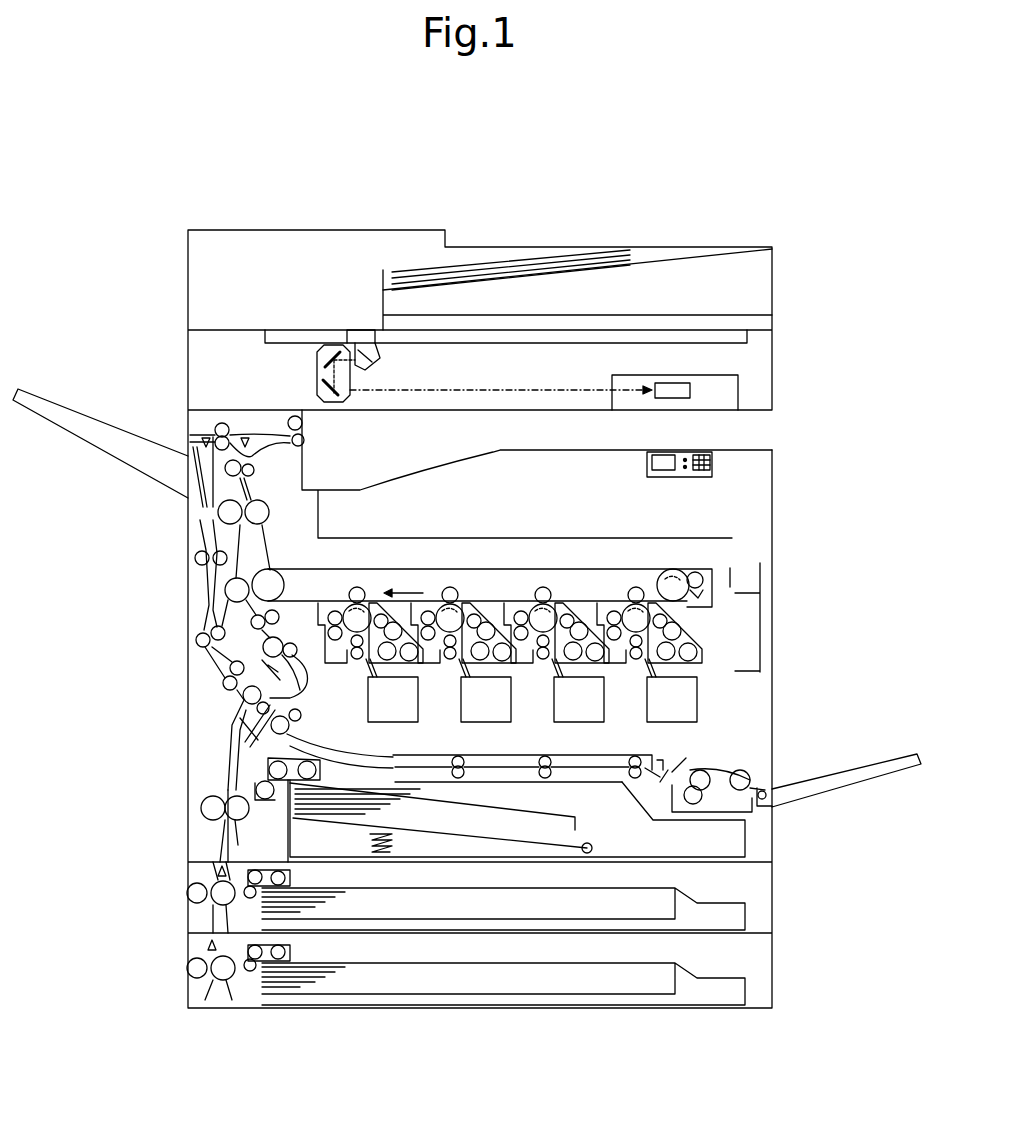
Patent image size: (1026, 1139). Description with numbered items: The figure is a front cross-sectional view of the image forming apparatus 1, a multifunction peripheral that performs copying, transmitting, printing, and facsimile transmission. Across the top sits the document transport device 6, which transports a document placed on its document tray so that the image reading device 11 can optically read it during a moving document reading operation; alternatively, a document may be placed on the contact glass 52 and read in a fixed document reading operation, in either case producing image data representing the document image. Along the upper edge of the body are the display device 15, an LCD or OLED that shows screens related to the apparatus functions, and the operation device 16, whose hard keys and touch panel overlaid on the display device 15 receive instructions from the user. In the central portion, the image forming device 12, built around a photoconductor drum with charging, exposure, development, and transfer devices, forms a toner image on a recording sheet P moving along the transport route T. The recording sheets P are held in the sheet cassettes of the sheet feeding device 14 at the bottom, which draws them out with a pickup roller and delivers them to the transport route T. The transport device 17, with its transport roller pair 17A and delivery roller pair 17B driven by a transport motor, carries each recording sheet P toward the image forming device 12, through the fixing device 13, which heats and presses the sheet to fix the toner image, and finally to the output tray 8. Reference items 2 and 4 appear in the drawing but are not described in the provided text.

The image forming apparatus 1 is at (488, 206).
The image reading unit 2 is at (561, 294).
The document tray 4 is at (678, 262).
The document transport device 6 is at (570, 239).
The contact glass 52 is at (628, 336).
The image reading device 11 is at (178, 364).
The output tray 8 is at (430, 465).
The display device 15 is at (668, 462).
The operation device 16 is at (712, 466).
The image forming device 12 is at (745, 633).
The fixing device 13 is at (218, 513).
The transport device 17 is at (210, 693).
The transport roller pair 17A is at (315, 679).
The delivery roller pair 17B is at (304, 441).
The transport route T is at (235, 736).
The sheet feeding device 14 is at (752, 887).
The recording sheet P is at (562, 806).